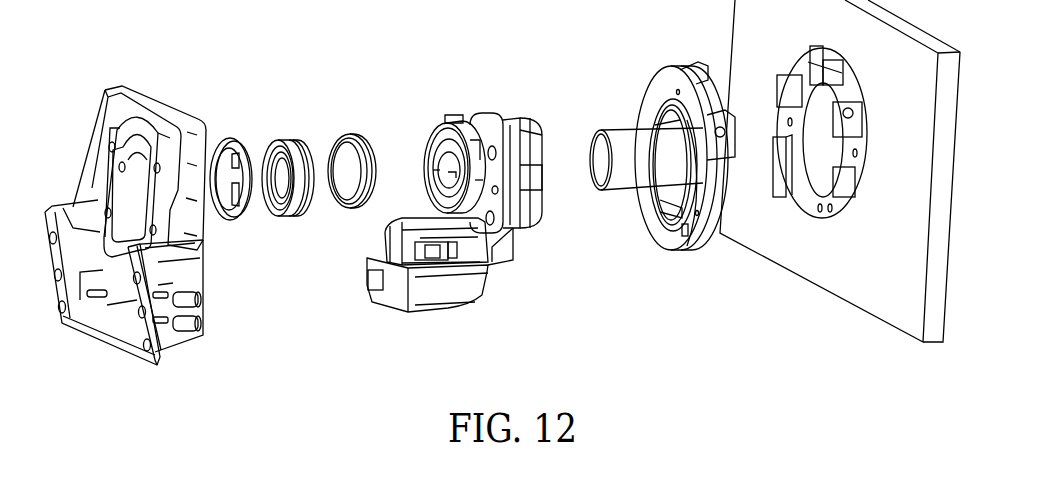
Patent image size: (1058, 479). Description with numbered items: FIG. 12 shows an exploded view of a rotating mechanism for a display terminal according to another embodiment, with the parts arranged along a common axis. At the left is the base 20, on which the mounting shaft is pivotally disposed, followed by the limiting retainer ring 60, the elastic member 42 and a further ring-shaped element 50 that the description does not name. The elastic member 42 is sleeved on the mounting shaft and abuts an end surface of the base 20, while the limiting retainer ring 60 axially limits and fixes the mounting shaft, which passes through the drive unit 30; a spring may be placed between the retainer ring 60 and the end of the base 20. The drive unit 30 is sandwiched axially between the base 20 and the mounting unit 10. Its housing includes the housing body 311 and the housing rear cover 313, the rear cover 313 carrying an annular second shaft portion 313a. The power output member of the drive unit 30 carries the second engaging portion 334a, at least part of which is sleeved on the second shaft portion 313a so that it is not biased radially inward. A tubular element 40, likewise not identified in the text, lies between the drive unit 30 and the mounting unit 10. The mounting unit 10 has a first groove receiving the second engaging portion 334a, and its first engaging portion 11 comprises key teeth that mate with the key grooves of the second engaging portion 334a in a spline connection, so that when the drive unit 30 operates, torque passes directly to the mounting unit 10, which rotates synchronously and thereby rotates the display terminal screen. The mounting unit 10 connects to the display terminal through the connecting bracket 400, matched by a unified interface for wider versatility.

The base 20 is at (155, 103).
The limiting retainer ring 60 is at (238, 140).
The elastic member 42 is at (303, 150).
The seal ring 50 is at (350, 133).
The drive unit 30 is at (472, 148).
The housing rear cover 313 is at (460, 130).
The second shaft portion 313a is at (441, 146).
The housing body 311 is at (497, 128).
The second engaging portion 334a is at (540, 182).
The tube 40 is at (632, 148).
The mounting unit 10 is at (660, 87).
The first engaging portion 11 is at (658, 227).
The connecting bracket 400 is at (782, 135).